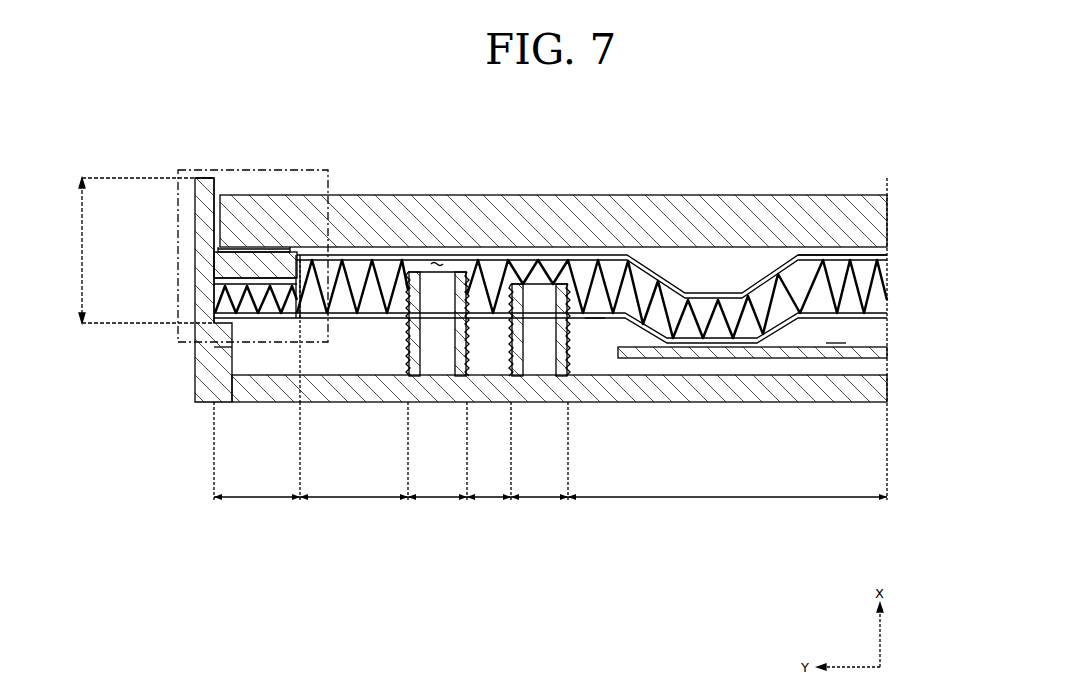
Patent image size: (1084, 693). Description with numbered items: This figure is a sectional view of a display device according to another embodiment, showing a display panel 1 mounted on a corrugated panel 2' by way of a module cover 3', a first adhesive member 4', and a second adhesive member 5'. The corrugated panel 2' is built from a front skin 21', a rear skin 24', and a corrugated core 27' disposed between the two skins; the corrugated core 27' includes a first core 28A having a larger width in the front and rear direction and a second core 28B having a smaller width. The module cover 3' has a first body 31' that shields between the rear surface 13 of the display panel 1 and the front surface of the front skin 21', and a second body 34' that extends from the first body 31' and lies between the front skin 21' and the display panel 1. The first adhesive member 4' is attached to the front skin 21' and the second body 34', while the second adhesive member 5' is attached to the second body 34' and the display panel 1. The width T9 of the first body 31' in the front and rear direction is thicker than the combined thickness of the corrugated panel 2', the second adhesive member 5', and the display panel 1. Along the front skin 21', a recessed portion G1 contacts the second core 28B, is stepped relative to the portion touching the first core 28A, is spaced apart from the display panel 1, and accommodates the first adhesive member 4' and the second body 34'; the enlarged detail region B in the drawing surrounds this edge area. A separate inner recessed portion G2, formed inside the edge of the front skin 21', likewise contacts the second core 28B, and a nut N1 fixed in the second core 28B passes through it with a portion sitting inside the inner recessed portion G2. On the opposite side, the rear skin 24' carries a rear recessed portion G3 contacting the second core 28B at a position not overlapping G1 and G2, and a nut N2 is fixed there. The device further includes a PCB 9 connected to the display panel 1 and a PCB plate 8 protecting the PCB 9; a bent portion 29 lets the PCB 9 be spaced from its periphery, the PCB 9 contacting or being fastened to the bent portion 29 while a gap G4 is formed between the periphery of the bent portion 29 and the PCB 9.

The display panel 1 is at (604, 217).
The corrugated panel 2' is at (178, 290).
The module cover 3' is at (200, 250).
The first body 31' is at (171, 250).
The second body 34' is at (212, 265).
The first adhesive member 4' is at (212, 293).
The second adhesive member 5' is at (254, 187).
The rear surface 13 is at (264, 249).
The PCB plate 8 is at (880, 388).
The PCB 9 is at (884, 352).
The front skin 21' is at (842, 208).
The rear skin 24' is at (615, 329).
The corrugated core 27' is at (615, 276).
The bent portion 29 is at (786, 342).
The recessed portion G1 is at (318, 268).
The inner recessed portion G2 is at (440, 262).
The rear recessed portion G3 is at (596, 320).
The gap G4 is at (836, 334).
The nut N1 is at (410, 258).
The nut N2 is at (518, 265).
The region B is at (252, 246).
The width of the first body T9 is at (138, 250).
The first core 28A is at (524, 462).
The second core 28B is at (550, 462).